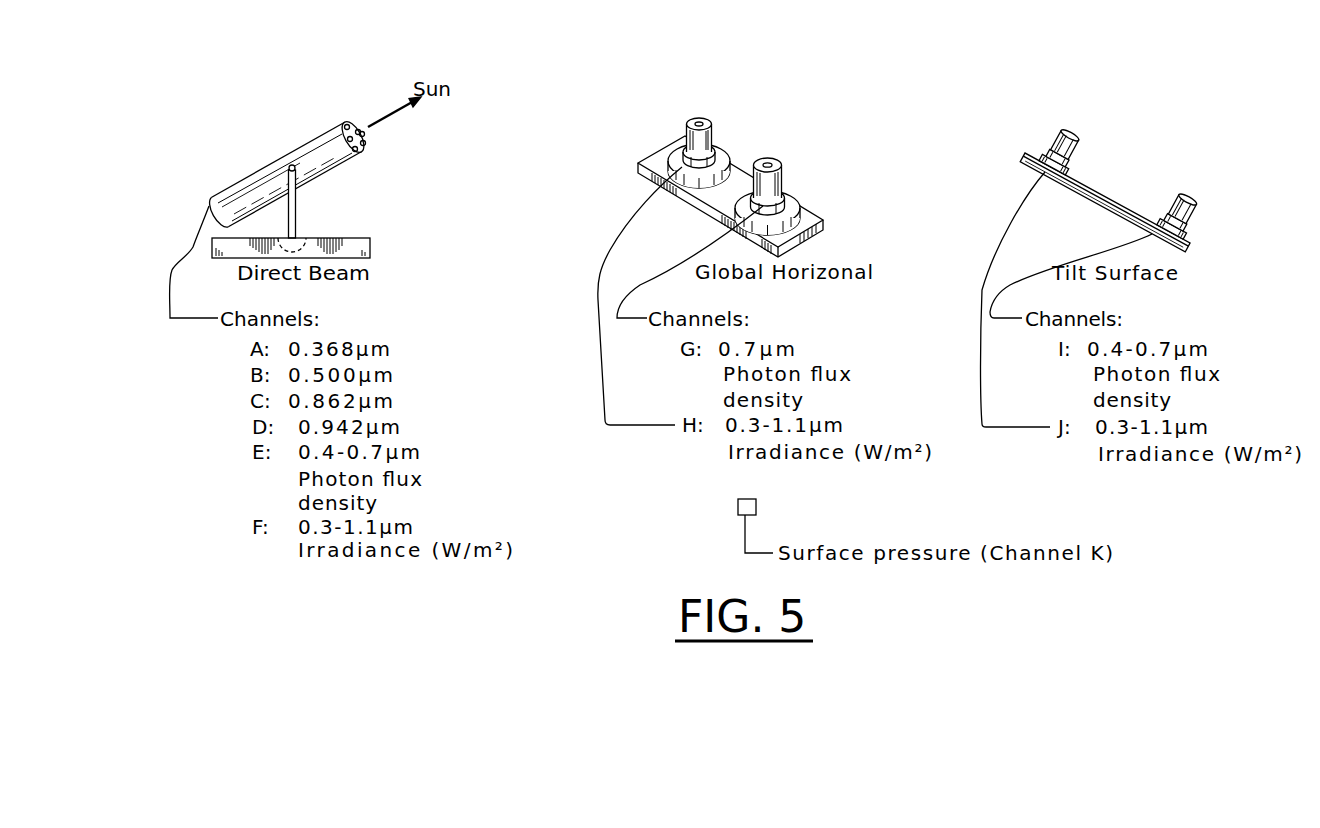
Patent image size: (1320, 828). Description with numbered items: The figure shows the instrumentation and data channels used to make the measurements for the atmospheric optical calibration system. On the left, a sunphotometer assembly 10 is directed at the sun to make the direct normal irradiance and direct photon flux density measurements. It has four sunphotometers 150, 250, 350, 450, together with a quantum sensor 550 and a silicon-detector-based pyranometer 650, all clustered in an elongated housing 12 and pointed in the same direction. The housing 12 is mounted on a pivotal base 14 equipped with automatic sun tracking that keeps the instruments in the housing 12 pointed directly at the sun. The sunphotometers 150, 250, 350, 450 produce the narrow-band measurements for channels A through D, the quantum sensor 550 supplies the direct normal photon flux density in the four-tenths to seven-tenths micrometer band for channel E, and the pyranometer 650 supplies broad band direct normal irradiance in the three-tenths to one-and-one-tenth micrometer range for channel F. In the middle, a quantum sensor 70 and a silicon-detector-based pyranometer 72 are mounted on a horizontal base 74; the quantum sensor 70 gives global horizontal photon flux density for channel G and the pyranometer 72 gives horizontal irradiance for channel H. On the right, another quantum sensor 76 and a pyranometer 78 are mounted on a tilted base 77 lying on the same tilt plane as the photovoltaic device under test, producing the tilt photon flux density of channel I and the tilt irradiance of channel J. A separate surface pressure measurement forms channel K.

The sunphotometer assembly 10 is at (224, 188).
The elongated housing 12 is at (308, 188).
The pivotal base 14 is at (300, 236).
The sunphotometer 150 is at (347, 124).
The sunphotometer 250 is at (358, 129).
The sunphotometer 350 is at (366, 134).
The sunphotometer 450 is at (367, 142).
The quantum sensor 550 is at (362, 151).
The silicon-detector-based pyranometer 650 is at (349, 136).
The quantum sensor 70 is at (782, 176).
The silicon-detector-based pyranometer 72 is at (712, 135).
The horizontal base 74 is at (705, 213).
The quantum sensor 76 is at (1190, 211).
The tilted base 77 is at (1107, 194).
The pyranometer 78 is at (1060, 128).